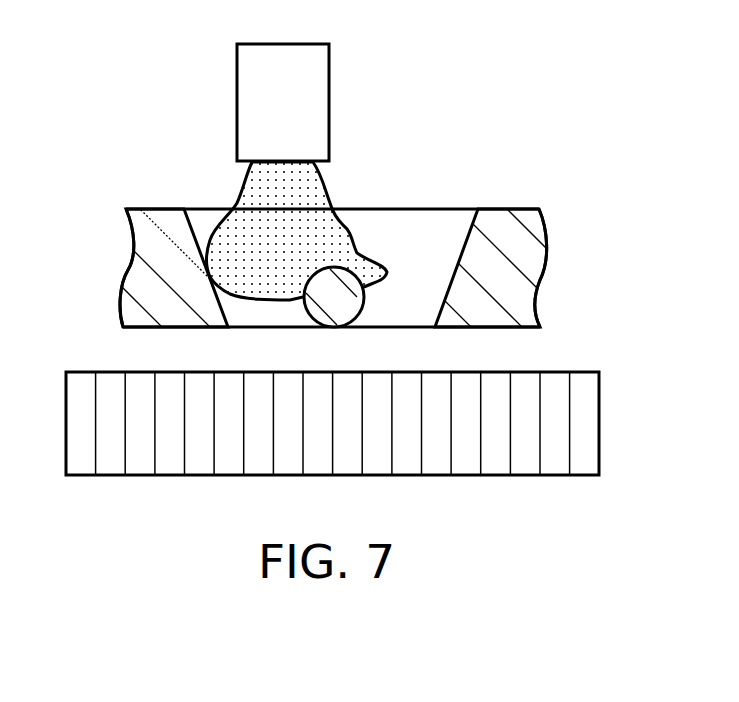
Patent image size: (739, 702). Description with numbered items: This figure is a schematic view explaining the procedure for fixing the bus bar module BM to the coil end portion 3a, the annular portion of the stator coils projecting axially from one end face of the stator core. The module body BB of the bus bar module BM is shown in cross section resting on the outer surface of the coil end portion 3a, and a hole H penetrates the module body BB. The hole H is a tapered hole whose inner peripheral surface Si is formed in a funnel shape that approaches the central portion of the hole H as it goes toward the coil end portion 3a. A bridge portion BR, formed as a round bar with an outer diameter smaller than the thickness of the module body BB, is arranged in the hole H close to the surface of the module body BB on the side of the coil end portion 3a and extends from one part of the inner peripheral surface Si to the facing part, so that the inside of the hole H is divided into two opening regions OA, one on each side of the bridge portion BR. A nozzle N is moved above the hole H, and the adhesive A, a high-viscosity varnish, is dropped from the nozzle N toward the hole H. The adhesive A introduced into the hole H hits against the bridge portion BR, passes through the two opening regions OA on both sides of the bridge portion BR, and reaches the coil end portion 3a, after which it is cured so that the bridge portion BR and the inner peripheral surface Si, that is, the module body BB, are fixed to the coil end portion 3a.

The nozzle N is at (243, 90).
The adhesive A is at (240, 227).
The bus bar module BM is at (124, 229).
The hole H is at (405, 238).
The inner peripheral surface Si is at (460, 257).
The module body BB is at (497, 222).
The bridge portion BR is at (345, 298).
The coil end portion 3a is at (120, 380).
The opening region OA is at (276, 323).